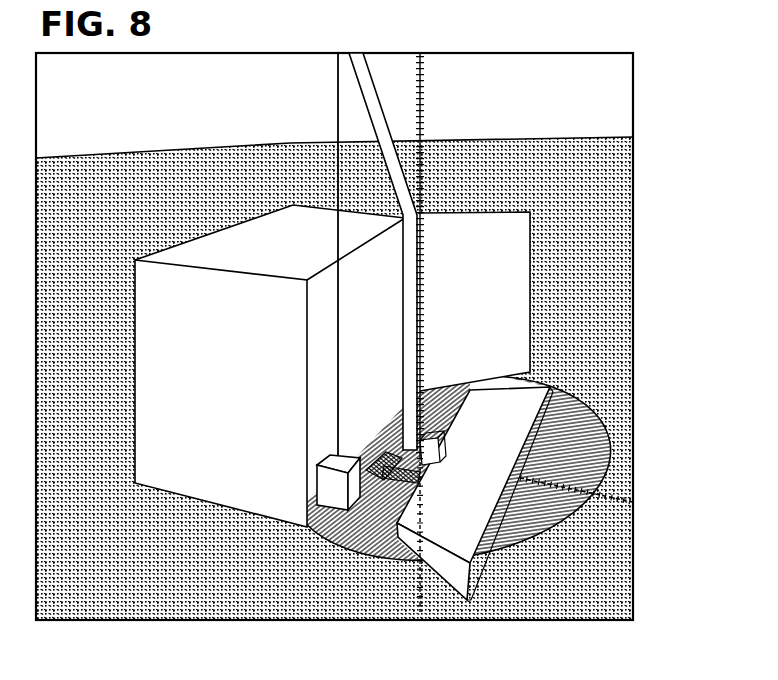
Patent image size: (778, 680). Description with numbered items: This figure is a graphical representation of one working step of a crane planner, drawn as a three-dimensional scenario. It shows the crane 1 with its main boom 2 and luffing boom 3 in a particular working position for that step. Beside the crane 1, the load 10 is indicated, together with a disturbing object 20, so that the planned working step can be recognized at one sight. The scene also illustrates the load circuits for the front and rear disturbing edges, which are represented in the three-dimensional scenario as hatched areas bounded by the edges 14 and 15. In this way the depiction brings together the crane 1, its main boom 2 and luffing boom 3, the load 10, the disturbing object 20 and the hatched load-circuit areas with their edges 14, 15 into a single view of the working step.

The crane 1 is at (410, 387).
The main boom 2 is at (412, 276).
The luffing boom 3 is at (374, 95).
The load 10 is at (335, 497).
The front disturbing edge 14 is at (368, 505).
The rear disturbing edge 15 is at (590, 517).
The disturbing object 20 is at (228, 397).